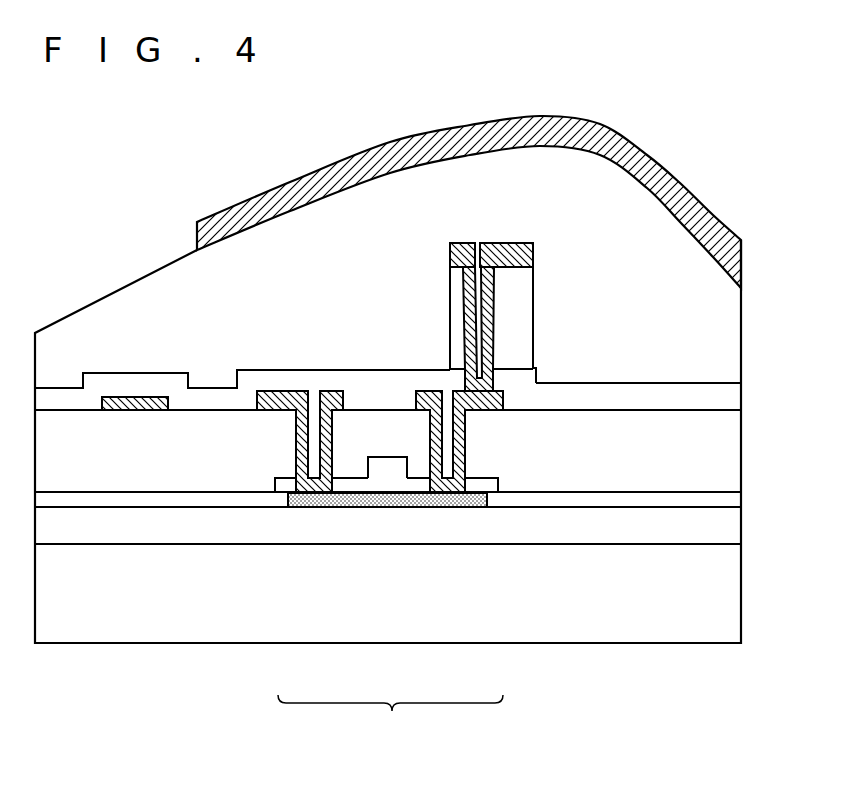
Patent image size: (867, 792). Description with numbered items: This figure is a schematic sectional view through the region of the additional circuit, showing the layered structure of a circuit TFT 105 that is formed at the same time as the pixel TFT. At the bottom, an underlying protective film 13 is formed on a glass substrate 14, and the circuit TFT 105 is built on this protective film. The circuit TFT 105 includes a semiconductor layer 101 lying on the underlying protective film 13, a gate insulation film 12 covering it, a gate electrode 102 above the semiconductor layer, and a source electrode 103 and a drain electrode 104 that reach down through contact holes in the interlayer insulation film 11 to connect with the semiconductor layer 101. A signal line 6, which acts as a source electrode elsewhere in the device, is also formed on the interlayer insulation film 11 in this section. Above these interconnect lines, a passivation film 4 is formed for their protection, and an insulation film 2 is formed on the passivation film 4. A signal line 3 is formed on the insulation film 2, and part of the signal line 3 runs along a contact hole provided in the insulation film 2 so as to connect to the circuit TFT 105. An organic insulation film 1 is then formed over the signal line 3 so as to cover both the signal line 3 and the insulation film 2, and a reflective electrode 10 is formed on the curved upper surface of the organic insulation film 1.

The organic insulation film 1 is at (730, 338).
The insulation film 2 is at (512, 323).
The signal line 3 is at (525, 255).
The passivation film 4 is at (728, 393).
The signal line 6 is at (143, 397).
The reflective electrode 10 is at (737, 255).
The interlayer insulation film 11 is at (730, 452).
The gate insulation film 12 is at (730, 496).
The underlying protective film 13 is at (728, 532).
The glass substrate 14 is at (728, 581).
The semiconductor layer 101 is at (318, 500).
The gate electrode 102 is at (397, 468).
The source electrode 103 is at (296, 458).
The drain electrode 104 is at (462, 447).
The circuit TFT 105 is at (390, 719).